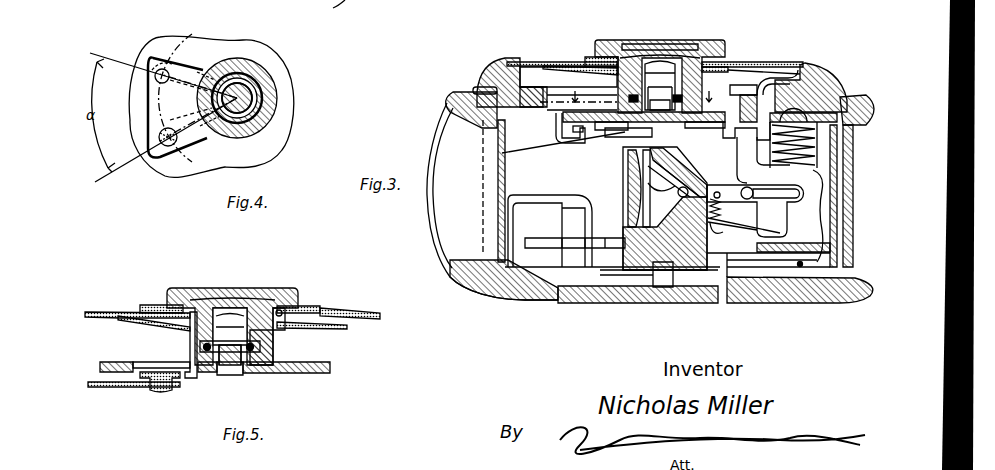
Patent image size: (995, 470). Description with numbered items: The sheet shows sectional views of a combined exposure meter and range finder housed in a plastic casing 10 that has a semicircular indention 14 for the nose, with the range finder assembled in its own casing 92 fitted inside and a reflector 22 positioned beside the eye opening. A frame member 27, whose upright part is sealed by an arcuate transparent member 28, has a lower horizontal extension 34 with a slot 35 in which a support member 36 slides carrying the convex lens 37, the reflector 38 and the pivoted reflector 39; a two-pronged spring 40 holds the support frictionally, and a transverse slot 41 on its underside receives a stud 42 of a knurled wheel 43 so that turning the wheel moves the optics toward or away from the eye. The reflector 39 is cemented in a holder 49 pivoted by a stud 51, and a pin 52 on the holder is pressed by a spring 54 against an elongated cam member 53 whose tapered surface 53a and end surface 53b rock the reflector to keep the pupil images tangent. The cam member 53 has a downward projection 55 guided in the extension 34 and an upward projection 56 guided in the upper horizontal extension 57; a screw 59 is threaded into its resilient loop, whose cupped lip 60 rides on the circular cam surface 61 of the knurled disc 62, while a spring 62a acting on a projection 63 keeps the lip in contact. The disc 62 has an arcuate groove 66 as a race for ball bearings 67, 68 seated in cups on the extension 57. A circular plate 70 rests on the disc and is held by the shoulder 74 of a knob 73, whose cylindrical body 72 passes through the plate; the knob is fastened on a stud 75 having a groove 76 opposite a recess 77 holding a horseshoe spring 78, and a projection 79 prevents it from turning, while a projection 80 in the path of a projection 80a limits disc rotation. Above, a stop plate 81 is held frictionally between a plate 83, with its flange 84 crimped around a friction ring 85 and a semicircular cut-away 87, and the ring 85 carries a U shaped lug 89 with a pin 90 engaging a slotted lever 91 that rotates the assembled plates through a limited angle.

In FIG. 3, the casing 10 is at (523, 298).
In FIG. 3, the semicircular indention 14 is at (700, 106).
In FIG. 3, the reflector 22 is at (596, 145).
In FIG. 3, the frame member 27 is at (838, 186).
In FIG. 3, the arcuate transparent member 28 is at (838, 210).
In FIG. 3, the horizontal extension 34 is at (781, 255).
In FIG. 3, the slot 35 is at (741, 248).
In FIG. 3, the sliding support member 36 is at (689, 271).
In FIG. 3, the convex lens 37 is at (627, 177).
In FIG. 3, the reflector 38 is at (628, 210).
In FIG. 3, the pivoted reflector 39 is at (692, 160).
In FIG. 3, the two-pronged spring 40 is at (716, 257).
In FIG. 3, the transverse slot 41 is at (622, 278).
In FIG. 3, the stud 42 is at (651, 288).
In FIG. 3, the knurled wheel 43 is at (565, 304).
In FIG. 3, the reflector holder 49 is at (676, 150).
In FIG. 3, the stud 51 is at (698, 176).
In FIG. 3, the pin 52 is at (757, 193).
In FIG. 3, the elongated cam member 53 is at (765, 238).
In FIG. 3, the tapered surface 53a is at (763, 205).
In FIG. 3, the tapering surface 53b is at (640, 192).
In FIG. 3, the spring 54 is at (722, 224).
In FIG. 3, the downward projection 55 is at (802, 262).
In FIG. 3, the upward projection 56 is at (752, 121).
In FIG. 3, the upper horizontal extension 57 is at (706, 121).
In FIG. 3, the screw 59 is at (780, 76).
In FIG. 3, the cupped lip 60 is at (797, 80).
In FIG. 3, the circular cam surface 61 is at (557, 84).
In FIG. 3, the knurled disc 62 is at (490, 64).
In FIG. 3, the spring 62a is at (853, 140).
In FIG. 3, the projection 63 is at (790, 166).
In FIG. 3, the arcuate groove 66 is at (530, 107).
In FIG. 3, the ball bearing 67 is at (846, 80).
In FIG. 3, the ball bearing 68 is at (568, 125).
In FIG. 5, the circular plate 70 is at (100, 312).
In FIG. 3, the circular plate 70 is at (523, 61).
In FIG. 4, the cylindrical body 72 is at (278, 97).
In FIG. 5, the cylindrical body 72 is at (273, 353).
In FIG. 3, the cylindrical body 72 is at (600, 78).
In FIG. 5, the knob 73 is at (212, 300).
In FIG. 3, the knob 73 is at (616, 42).
In FIG. 5, the shoulder 74 is at (272, 300).
In FIG. 3, the shoulder 74 is at (648, 66).
In FIG. 5, the stud 75 is at (222, 326).
In FIG. 3, the stud 75 is at (658, 78).
In FIG. 5, the groove 76 is at (232, 343).
In FIG. 3, the groove 76 is at (665, 96).
In FIG. 4, the recess 77 is at (258, 86).
In FIG. 5, the recess 77 is at (262, 342).
In FIG. 3, the recess 77 is at (700, 66).
In FIG. 4, the horseshoe spring 78 is at (218, 72).
In FIG. 5, the horseshoe spring 78 is at (208, 371).
In FIG. 3, the horseshoe spring 78 is at (676, 117).
In FIG. 5, the projection 79 is at (268, 371).
In FIG. 3, the projection 80 is at (462, 90).
In FIG. 3, the projection 80a is at (850, 95).
In FIG. 5, the stop plate 81 is at (128, 311).
In FIG. 3, the stop plate 81 is at (555, 62).
In FIG. 5, the plate 83 is at (148, 304).
In FIG. 3, the plate 83 is at (578, 64).
In FIG. 5, the flange 84 is at (281, 294).
In FIG. 3, the flange 84 is at (636, 43).
In FIG. 5, the friction ring 85 is at (300, 327).
In FIG. 3, the friction ring 85 is at (738, 62).
In FIG. 3, the semicircular cut-away 87 is at (752, 62).
In FIG. 4, the U shaped lug 89 is at (190, 150).
In FIG. 5, the U shaped lug 89 is at (188, 380).
In FIG. 4, the pin 90 is at (166, 142).
In FIG. 5, the pin 90 is at (160, 391).
In FIG. 5, the slotted lever 91 is at (120, 388).
In FIG. 3, the range finder casing 92 is at (550, 231).